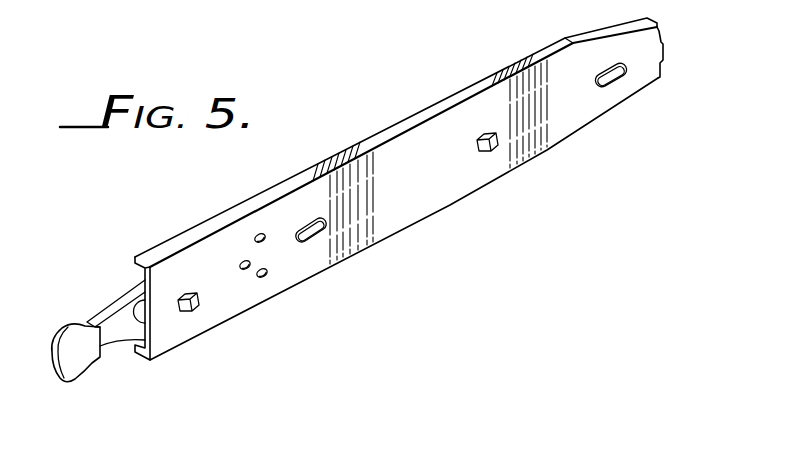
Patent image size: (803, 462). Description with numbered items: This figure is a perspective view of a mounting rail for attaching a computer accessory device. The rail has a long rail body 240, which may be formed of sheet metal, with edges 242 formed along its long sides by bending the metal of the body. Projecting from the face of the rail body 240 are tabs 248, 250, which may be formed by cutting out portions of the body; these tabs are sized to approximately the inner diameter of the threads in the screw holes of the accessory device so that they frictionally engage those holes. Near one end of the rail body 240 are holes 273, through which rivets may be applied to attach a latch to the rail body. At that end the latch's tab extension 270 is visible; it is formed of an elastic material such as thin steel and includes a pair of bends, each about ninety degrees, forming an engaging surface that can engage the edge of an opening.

The rail body 240 is at (607, 100).
The edges 242 is at (473, 87).
The tab 248 is at (493, 150).
The tab 250 is at (192, 307).
The holes 273 is at (238, 264).
The tab extension 270 is at (106, 371).